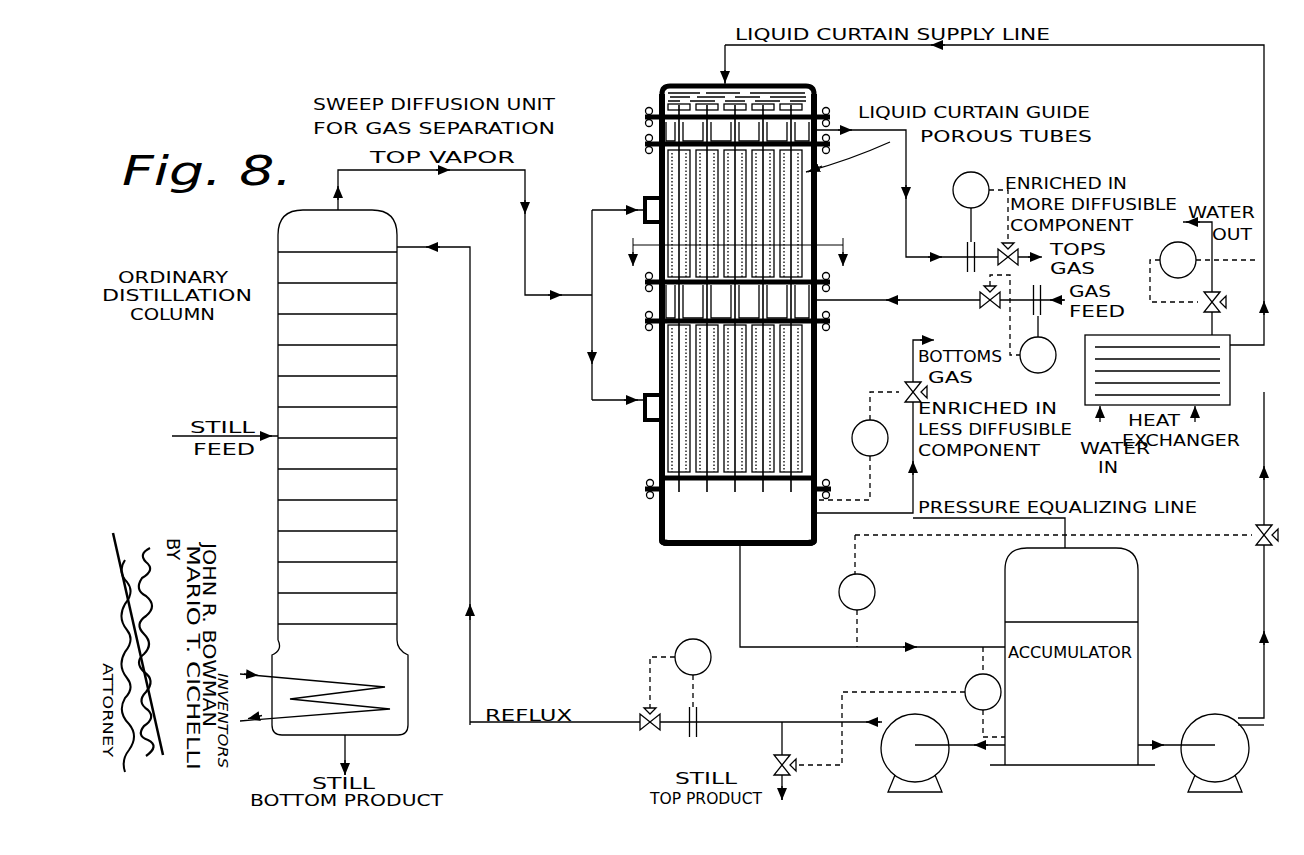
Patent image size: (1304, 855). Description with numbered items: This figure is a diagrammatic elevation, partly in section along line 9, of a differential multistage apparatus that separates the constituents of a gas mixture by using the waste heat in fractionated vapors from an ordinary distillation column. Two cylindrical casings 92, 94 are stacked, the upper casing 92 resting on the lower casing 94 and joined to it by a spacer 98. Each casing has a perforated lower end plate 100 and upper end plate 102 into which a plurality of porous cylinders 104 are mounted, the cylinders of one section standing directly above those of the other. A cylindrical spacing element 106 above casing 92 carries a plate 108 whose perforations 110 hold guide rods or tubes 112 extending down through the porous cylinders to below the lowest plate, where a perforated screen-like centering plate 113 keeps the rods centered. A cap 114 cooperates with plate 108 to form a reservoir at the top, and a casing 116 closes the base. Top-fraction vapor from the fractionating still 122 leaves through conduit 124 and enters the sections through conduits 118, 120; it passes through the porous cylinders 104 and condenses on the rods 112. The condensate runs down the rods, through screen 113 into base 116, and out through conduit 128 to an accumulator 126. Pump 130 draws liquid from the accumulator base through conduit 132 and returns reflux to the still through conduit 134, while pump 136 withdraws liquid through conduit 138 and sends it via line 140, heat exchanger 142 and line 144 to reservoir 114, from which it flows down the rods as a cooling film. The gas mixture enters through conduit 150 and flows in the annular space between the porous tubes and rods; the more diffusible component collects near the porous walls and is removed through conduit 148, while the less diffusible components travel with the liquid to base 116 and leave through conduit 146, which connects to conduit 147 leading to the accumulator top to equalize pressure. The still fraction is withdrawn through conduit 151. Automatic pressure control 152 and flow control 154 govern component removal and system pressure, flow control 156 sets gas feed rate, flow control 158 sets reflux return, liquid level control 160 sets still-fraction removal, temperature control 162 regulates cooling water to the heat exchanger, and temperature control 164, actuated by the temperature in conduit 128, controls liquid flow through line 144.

The section line 9- 9 is at (735, 251).
The cylindrical casing 92 is at (817, 218).
The cylindrical casing 94 is at (817, 377).
The spacer 98 is at (826, 290).
The lower end plate 100 is at (693, 283).
The upper end plate 102 is at (722, 81).
The porous cylinders 104 is at (770, 203).
The cylindrical spacing element 106 is at (652, 118).
The plate 108 is at (747, 100).
The perforations 110 is at (800, 106).
The guide rods or tubes 112 is at (703, 130).
The perforated screen-like centering plate 113 is at (782, 482).
The cap 114 is at (670, 84).
The casing 116 is at (695, 546).
The conduit 118 is at (645, 198).
The conduit 120 is at (657, 415).
The fractionating still 122 is at (397, 448).
The conduit 124 is at (462, 171).
The accumulator 126 is at (1139, 623).
The conduit 128 is at (820, 647).
The pump 130 is at (939, 722).
The conduit 132 is at (940, 770).
The conduit 134 is at (475, 653).
The pump 136 is at (1235, 760).
The conduit 138 is at (1170, 752).
The line 140 is at (1264, 475).
The heat exchanger 142 is at (1231, 355).
The line 144 is at (1117, 45).
The conduit 146 is at (915, 337).
The conduit 147 is at (973, 521).
The conduit 148 is at (924, 201).
The conduit 150 is at (947, 295).
The conduit 151 is at (788, 783).
The automatic pressure control 152 is at (875, 452).
The automatic flow control 154 is at (971, 172).
The automatic flow control 156 is at (1047, 348).
The automatic flow control 158 is at (710, 663).
The automatic liquid level control 160 is at (976, 680).
The temperature control 162 is at (1167, 246).
The temperature control 164 is at (863, 578).